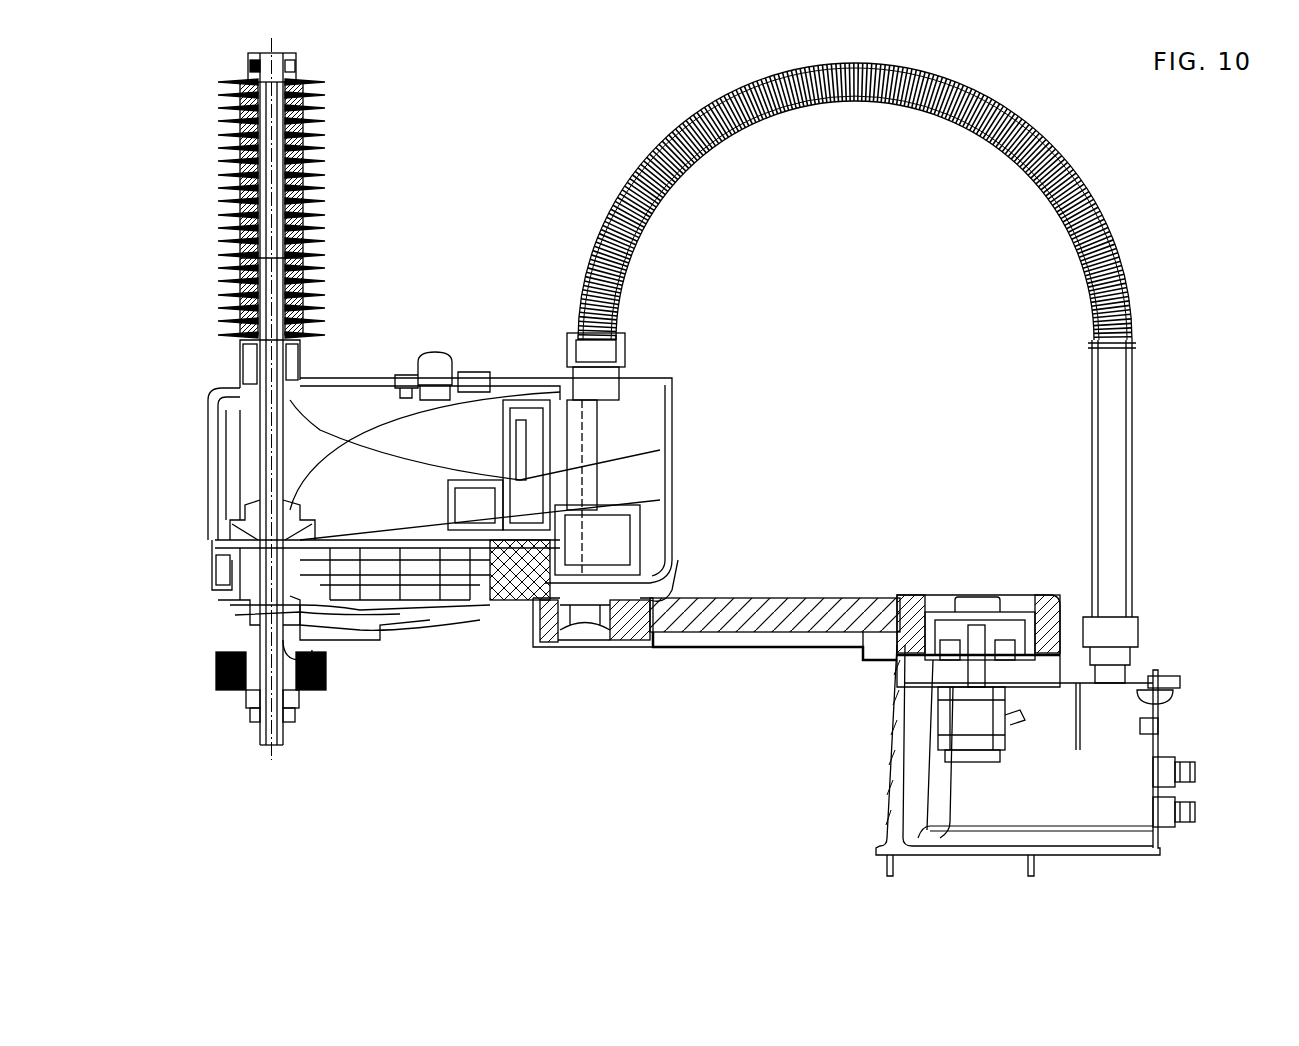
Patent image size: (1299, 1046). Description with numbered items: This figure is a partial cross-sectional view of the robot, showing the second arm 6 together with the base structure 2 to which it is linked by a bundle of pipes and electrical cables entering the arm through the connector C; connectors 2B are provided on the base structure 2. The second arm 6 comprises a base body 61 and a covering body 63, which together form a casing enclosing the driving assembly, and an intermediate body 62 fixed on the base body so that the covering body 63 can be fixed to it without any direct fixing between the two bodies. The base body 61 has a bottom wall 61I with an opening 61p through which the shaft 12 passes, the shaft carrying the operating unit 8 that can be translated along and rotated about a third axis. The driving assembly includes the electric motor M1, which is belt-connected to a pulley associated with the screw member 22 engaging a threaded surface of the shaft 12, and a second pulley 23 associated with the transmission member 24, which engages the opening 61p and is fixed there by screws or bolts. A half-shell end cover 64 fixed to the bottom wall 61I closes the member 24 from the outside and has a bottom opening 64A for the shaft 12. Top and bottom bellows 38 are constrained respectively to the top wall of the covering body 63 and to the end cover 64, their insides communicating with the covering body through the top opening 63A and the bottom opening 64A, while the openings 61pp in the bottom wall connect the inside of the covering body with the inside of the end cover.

The base structure 2 is at (1170, 855).
The electrical connectors 2B is at (1180, 745).
The second arm 6 is at (499, 469).
The operating unit 8 is at (245, 738).
The shaft 12 is at (292, 720).
The screw member 22 is at (246, 526).
The second pulley 23 is at (212, 585).
The transmission member 24 is at (232, 625).
The bellows 38 is at (330, 158).
The base body 61 is at (678, 545).
The bottom wall 61I is at (455, 588).
The opening 61p is at (400, 608).
The openings 61pp is at (365, 610).
The intermediate body 62 is at (528, 395).
The covering body 63 is at (675, 410).
The top opening 63A is at (243, 376).
The end cover 64 is at (338, 610).
The bottom opening 64A is at (300, 678).
The connector C is at (628, 350).
The electric motor M1 is at (525, 440).